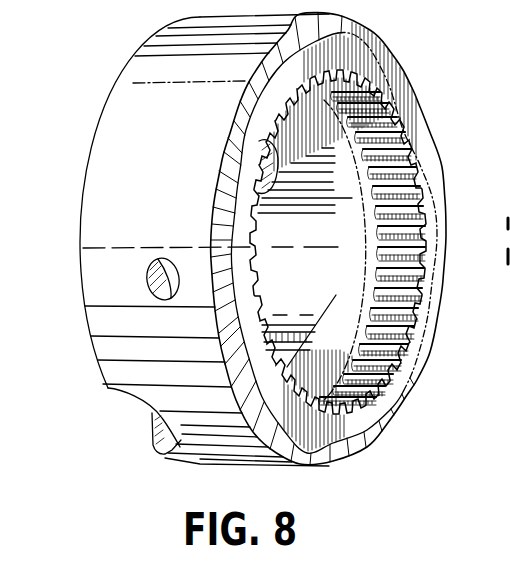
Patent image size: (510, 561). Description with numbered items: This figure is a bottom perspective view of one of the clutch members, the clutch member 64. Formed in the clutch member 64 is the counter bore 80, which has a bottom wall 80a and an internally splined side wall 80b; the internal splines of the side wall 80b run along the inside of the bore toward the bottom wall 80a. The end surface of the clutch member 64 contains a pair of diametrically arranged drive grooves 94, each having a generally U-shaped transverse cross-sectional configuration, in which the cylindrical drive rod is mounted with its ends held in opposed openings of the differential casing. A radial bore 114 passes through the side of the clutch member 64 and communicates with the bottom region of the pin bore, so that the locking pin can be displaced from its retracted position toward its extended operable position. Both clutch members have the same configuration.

The clutch member 64 is at (124, 101).
The counter bore 80 is at (412, 348).
The bottom wall 80a is at (355, 247).
The internally splined side wall 80b is at (392, 388).
The drive groove 94 is at (276, 170).
The radial bore 114 is at (153, 291).